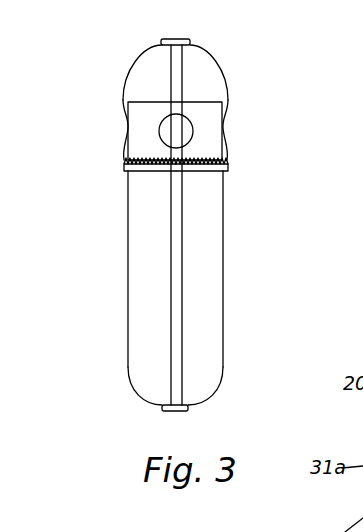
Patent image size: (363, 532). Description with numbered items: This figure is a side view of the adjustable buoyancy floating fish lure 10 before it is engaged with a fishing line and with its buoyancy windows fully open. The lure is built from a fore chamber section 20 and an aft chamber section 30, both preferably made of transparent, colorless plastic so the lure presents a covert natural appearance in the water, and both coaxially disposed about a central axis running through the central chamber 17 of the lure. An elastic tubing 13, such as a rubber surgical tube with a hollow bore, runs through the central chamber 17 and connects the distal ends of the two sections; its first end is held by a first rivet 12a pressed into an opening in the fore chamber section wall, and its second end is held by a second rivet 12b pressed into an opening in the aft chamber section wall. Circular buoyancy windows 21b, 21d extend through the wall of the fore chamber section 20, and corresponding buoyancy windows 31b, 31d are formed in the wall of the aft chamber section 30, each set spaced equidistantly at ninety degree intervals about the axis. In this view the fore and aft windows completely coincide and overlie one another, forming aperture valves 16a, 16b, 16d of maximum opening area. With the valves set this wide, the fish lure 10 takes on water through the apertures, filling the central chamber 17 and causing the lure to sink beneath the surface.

The adjustable buoyancy floating fish lure 10 is at (235, 265).
The first rivet 12a is at (193, 42).
The second rivet 12b is at (190, 410).
The elastic tubing 13 is at (183, 363).
The aperture valve 16a is at (208, 112).
The aperture valve 16b is at (243, 142).
The aperture valve 16d is at (121, 117).
The central chamber 17 is at (140, 298).
The fore chamber section 20 is at (148, 50).
The buoyancy window 21b is at (228, 133).
The buoyancy window 21d is at (125, 127).
The aft chamber section 30 is at (139, 392).
The buoyancy window 31b is at (222, 172).
The buoyancy window 31d is at (128, 172).